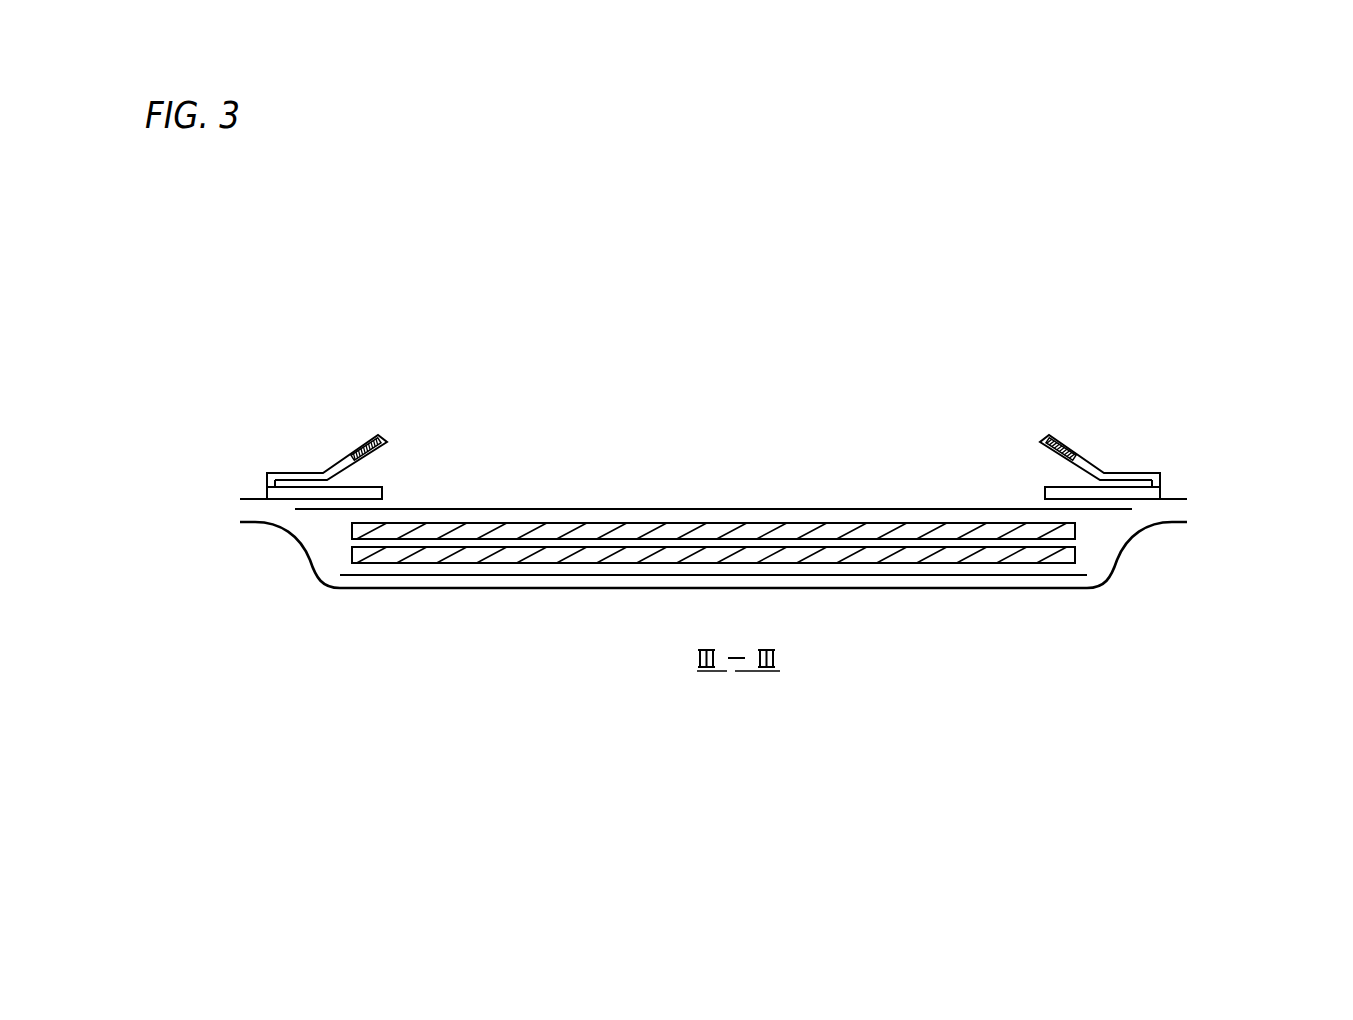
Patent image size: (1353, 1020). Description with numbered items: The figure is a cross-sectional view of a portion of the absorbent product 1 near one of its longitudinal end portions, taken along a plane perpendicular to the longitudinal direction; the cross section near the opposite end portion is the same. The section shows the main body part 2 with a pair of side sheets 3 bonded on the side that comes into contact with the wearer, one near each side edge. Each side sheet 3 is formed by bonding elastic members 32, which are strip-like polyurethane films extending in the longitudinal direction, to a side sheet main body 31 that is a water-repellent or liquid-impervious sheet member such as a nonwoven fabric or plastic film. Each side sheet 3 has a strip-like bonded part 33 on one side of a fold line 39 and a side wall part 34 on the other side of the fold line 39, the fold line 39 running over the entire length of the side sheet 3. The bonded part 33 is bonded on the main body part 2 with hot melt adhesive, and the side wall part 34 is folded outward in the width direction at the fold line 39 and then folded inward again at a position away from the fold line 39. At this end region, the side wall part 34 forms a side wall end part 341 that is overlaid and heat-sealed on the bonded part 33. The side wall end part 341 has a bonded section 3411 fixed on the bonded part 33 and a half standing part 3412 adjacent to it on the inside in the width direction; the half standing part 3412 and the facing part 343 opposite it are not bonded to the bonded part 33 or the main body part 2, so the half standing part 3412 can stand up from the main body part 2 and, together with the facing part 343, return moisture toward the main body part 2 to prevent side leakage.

The absorbent product 1 is at (201, 306).
The main body part 2 is at (744, 495).
The side sheet 3 is at (713, 407).
The side sheet main body 31 is at (268, 499).
The elastic member 32 is at (371, 437).
The bonded part 33 is at (252, 498).
The side wall part 34 is at (713, 406).
The fold line 39 is at (398, 500).
The side wall end part 341 is at (713, 424).
The facing part 343 is at (370, 486).
The bonded section 3411 is at (290, 473).
The half standing part 3412 is at (353, 452).